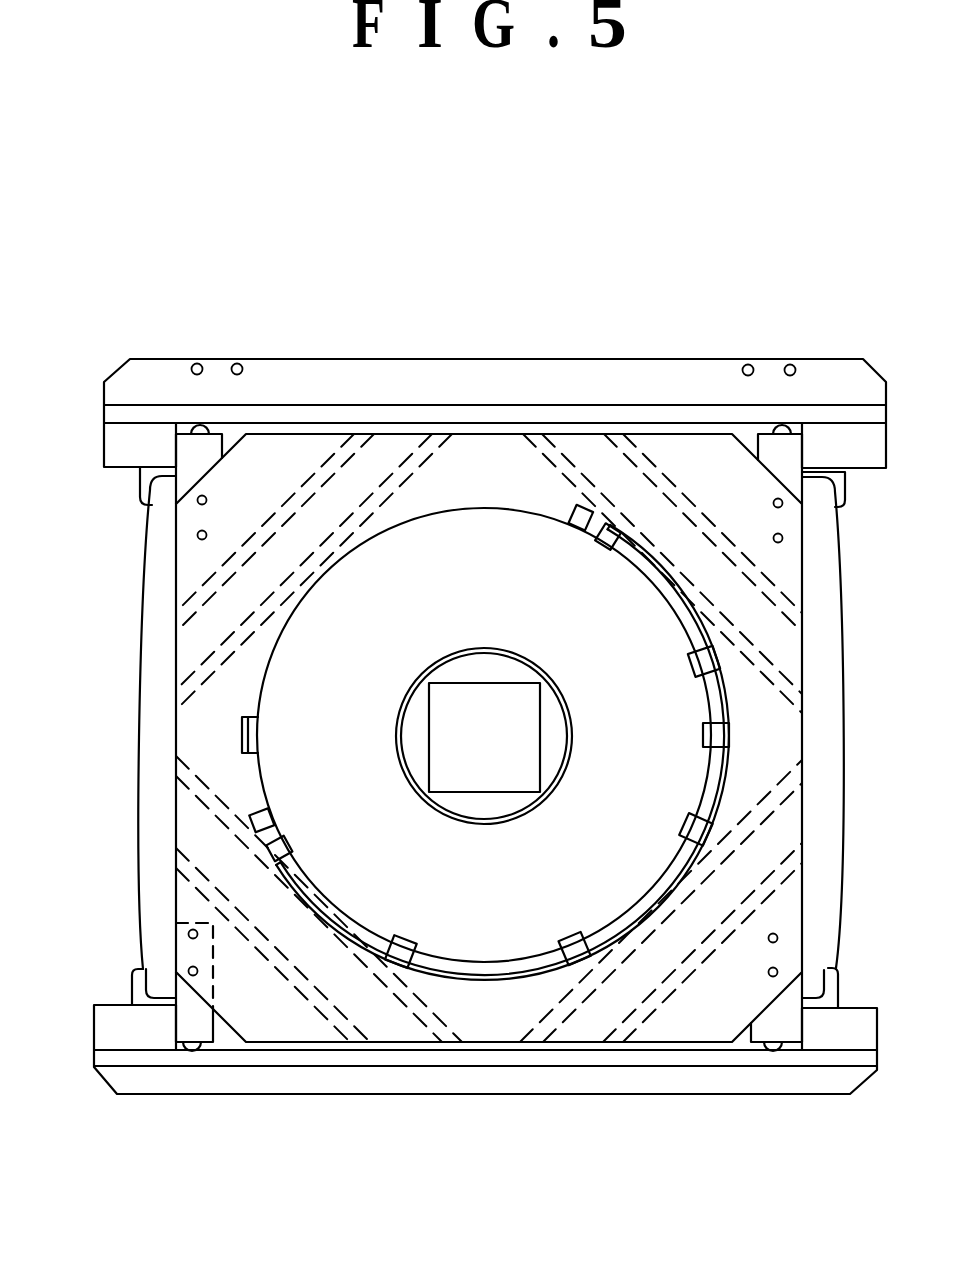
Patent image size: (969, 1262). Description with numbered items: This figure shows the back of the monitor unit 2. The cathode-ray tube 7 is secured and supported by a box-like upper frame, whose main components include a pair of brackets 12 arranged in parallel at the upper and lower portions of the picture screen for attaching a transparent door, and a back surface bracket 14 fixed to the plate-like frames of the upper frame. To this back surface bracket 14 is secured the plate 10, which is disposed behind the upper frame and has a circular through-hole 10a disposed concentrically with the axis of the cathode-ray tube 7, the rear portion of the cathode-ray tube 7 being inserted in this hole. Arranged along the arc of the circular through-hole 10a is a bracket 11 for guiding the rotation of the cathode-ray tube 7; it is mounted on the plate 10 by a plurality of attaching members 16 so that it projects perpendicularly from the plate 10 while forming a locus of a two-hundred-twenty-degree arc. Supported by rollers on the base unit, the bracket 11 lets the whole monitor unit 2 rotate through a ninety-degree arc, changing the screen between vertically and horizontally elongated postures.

The monitor unit 2 is at (567, 351).
The cathode-ray tube 7 is at (150, 600).
The plate 10 is at (249, 669).
The circular through-hole 10a is at (363, 796).
The bracket 11 is at (468, 977).
The brackets 12 is at (372, 361).
The back surface bracket 14 is at (802, 1006).
The attaching members 16 is at (698, 662).